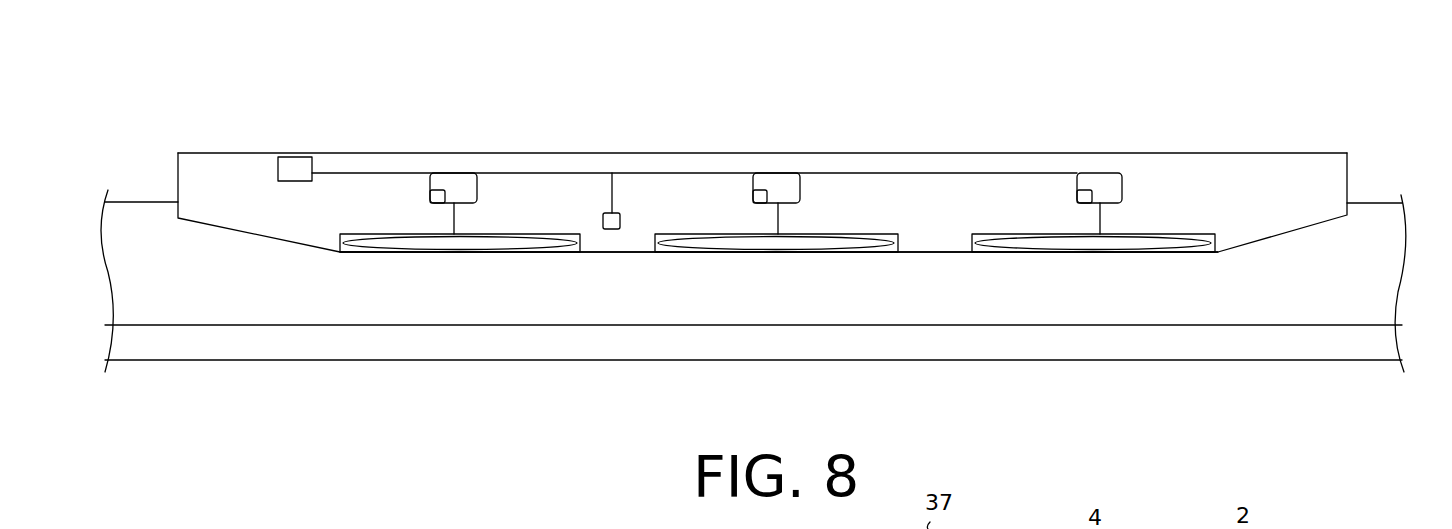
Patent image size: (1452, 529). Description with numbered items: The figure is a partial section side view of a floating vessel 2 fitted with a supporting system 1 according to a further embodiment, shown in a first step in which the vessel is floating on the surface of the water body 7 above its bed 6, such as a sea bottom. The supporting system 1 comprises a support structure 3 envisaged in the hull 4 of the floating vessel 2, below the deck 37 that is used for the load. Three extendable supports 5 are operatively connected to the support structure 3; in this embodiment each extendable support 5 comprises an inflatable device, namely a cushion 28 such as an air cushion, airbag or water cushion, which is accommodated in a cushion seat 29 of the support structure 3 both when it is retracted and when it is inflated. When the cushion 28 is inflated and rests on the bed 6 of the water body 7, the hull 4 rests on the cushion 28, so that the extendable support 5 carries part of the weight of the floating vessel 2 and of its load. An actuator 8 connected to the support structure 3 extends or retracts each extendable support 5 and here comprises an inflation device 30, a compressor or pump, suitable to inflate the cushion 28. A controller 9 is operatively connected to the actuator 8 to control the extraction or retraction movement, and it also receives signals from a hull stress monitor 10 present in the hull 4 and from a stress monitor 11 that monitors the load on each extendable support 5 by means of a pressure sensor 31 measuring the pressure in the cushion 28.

The supporting system 1 is at (397, 193).
The floating vessel 2 is at (1283, 170).
The support structure 3 is at (557, 233).
The hull 4 is at (648, 181).
The extendable support 5 is at (388, 260).
The bed 6 is at (1090, 324).
The water body 7 is at (1365, 230).
The actuator 8 is at (452, 181).
The controller 9 is at (300, 167).
The hull stress monitor 10 is at (613, 230).
The stress monitor 11 is at (440, 203).
The cushion 28 is at (437, 255).
The cushion seat 29 is at (500, 233).
The inflation device 30 is at (463, 175).
The pressure sensor 31 is at (433, 190).
The deck 37 is at (1245, 147).